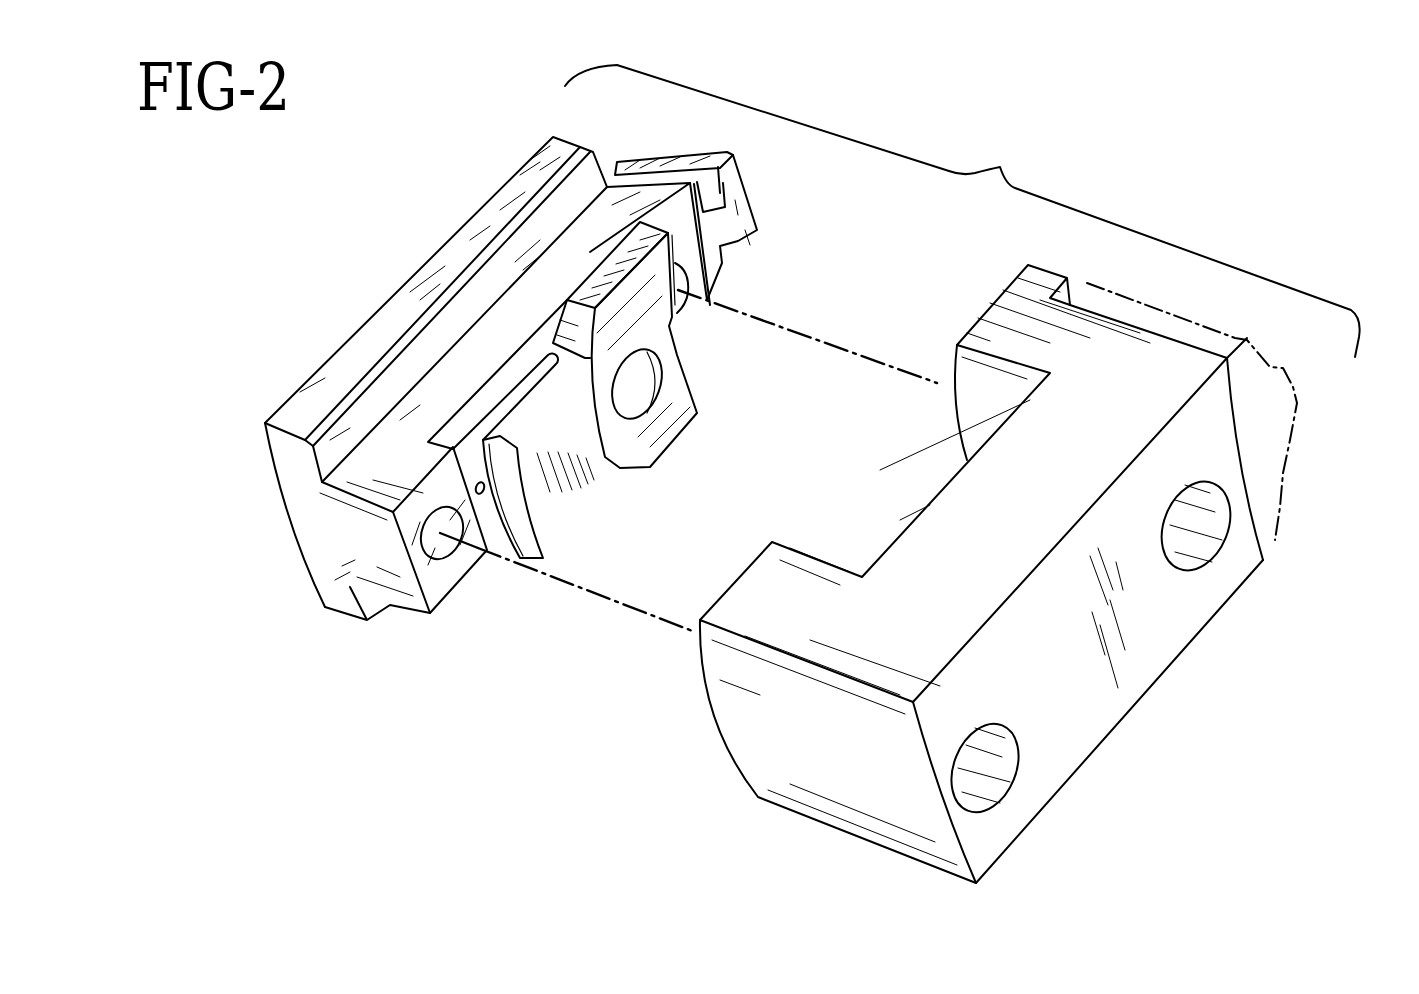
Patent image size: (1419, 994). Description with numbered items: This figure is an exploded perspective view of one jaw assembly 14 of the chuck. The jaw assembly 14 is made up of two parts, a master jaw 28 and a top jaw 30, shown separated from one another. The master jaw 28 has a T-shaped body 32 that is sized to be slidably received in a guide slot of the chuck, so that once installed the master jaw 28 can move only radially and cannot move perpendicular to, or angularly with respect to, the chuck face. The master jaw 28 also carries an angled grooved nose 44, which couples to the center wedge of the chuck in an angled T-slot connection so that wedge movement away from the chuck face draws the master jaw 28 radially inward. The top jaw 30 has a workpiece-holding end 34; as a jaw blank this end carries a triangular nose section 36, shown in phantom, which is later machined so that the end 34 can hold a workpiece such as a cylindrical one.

The jaw assembly 14 is at (1000, 167).
The master jaw 28 is at (243, 498).
The top jaw 30 is at (792, 835).
The T-shaped body 32 is at (327, 567).
The workpiece-holding end 34 is at (1270, 514).
The triangular nose section 36 is at (1278, 370).
The angled grooved nose 44 is at (673, 150).